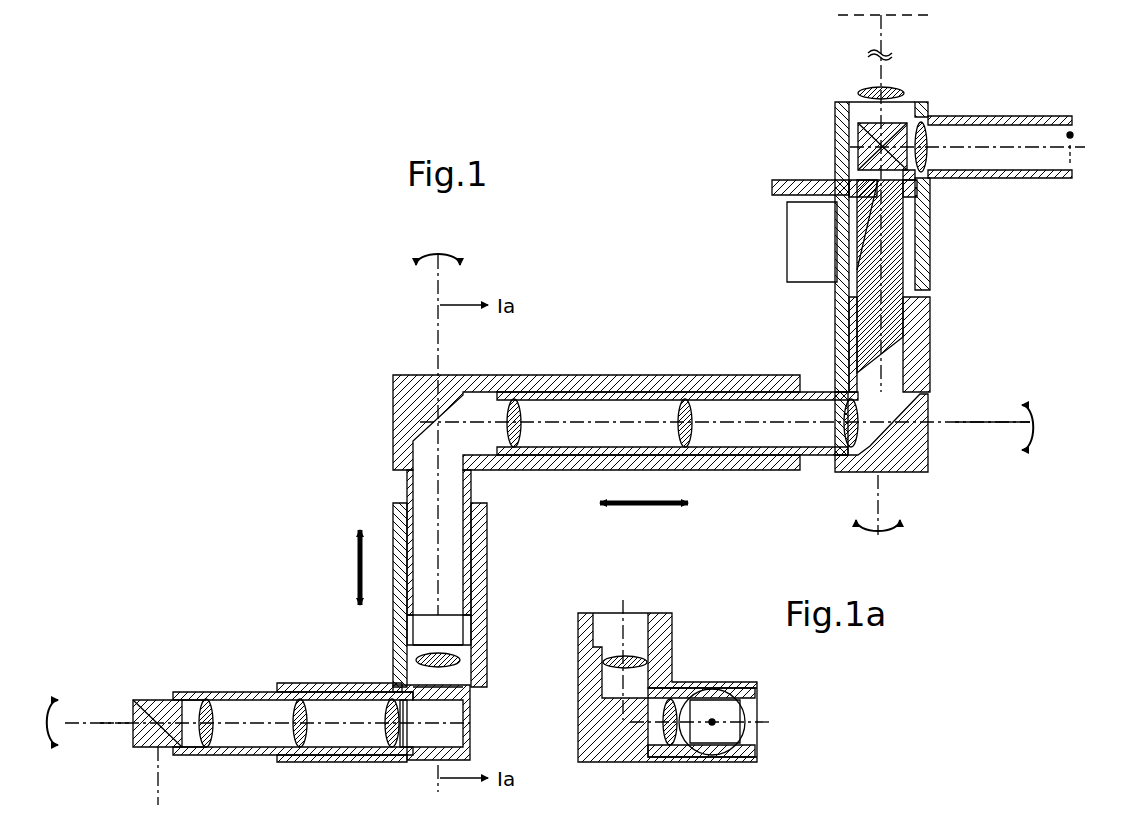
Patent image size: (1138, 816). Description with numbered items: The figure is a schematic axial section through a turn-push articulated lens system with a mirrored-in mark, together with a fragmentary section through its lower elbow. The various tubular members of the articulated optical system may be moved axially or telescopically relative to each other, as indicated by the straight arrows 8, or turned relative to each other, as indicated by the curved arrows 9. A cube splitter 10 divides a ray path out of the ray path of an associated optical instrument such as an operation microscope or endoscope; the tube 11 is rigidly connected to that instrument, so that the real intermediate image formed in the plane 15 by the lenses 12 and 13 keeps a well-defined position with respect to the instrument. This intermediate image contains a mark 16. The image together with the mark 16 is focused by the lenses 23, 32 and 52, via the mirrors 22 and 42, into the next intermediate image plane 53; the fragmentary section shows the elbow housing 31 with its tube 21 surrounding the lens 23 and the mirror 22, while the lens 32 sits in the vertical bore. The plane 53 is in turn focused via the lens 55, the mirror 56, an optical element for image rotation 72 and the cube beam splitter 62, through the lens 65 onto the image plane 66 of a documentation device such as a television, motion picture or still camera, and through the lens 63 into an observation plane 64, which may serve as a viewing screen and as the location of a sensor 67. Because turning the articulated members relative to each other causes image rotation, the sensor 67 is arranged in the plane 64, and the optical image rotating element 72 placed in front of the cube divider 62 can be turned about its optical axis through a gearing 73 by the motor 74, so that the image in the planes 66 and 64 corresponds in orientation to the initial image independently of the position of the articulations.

In FIG. 1, the straight arrows 8 is at (513, 554).
In FIG. 1, the curved arrows 9 is at (462, 257).
In FIG. 1, the cube splitter 10 is at (142, 702).
In FIG. 1, the tube 11 is at (182, 692).
In FIG. 1, the lens 12 is at (208, 700).
In FIG. 1, the lens 13 is at (300, 705).
In FIG. 1, the intermediate image plane 15 is at (404, 745).
In FIG. 1, the mark 16 is at (392, 700).
In FIG. 1A, the tube 21 is at (757, 697).
In FIG. 1, the mirror 22 is at (455, 712).
In FIG. 1A, the mirror 22 is at (740, 728).
In FIG. 1A, the lens 23 is at (672, 700).
In FIG. 1A, the housing 31 is at (670, 650).
In FIG. 1, the lens 32 is at (450, 655).
In FIG. 1A, the lens 32 is at (629, 660).
In FIG. 1, the mirror 42 is at (432, 400).
In FIG. 1, the lens 52 is at (518, 403).
In FIG. 1, the next intermediate image plane 53 is at (683, 400).
In FIG. 1, the lens 55 is at (845, 418).
In FIG. 1, the mirror 56 is at (905, 432).
In FIG. 1, the cube beam splitter 62 is at (858, 145).
In FIG. 1, the lens 63 is at (926, 150).
In FIG. 1, the observation plane 64 is at (1074, 176).
In FIG. 1, the lens 65 is at (862, 90).
In FIG. 1, the image plane of documentation device 66 is at (862, 22).
In FIG. 1, the sensor 67 is at (1072, 133).
In FIG. 1, the optical image rotating element 72 is at (885, 235).
In FIG. 1, the gearing 73 is at (772, 188).
In FIG. 1, the motor 74 is at (787, 240).